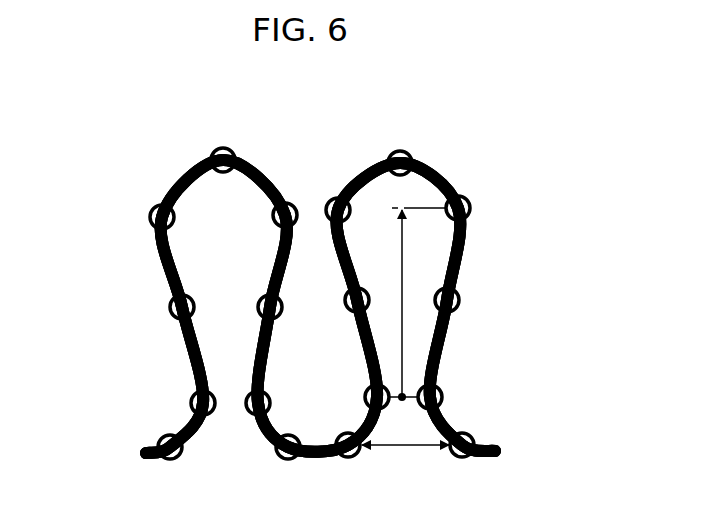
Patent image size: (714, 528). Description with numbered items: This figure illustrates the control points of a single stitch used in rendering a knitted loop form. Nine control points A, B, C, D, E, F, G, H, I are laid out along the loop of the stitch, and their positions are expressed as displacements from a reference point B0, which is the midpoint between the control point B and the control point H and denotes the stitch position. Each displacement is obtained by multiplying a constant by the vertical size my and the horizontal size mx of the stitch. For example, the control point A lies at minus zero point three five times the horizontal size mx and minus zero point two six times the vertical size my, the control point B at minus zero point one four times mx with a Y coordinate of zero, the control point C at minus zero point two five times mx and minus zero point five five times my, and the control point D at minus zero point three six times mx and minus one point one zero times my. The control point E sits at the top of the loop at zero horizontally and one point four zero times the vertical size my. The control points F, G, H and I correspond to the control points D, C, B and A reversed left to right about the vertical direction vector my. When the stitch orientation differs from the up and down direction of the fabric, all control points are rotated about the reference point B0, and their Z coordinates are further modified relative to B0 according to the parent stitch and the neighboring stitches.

The control point A is at (340, 434).
The control point B is at (428, 370).
The control point C is at (346, 307).
The control point D is at (330, 198).
The control point E is at (400, 148).
The control point F is at (471, 208).
The control point G is at (461, 300).
The control point H is at (444, 395).
The control point I is at (469, 437).
The reference point B0 is at (405, 411).
The horizontal size mx is at (405, 461).
The vertical size my is at (418, 302).